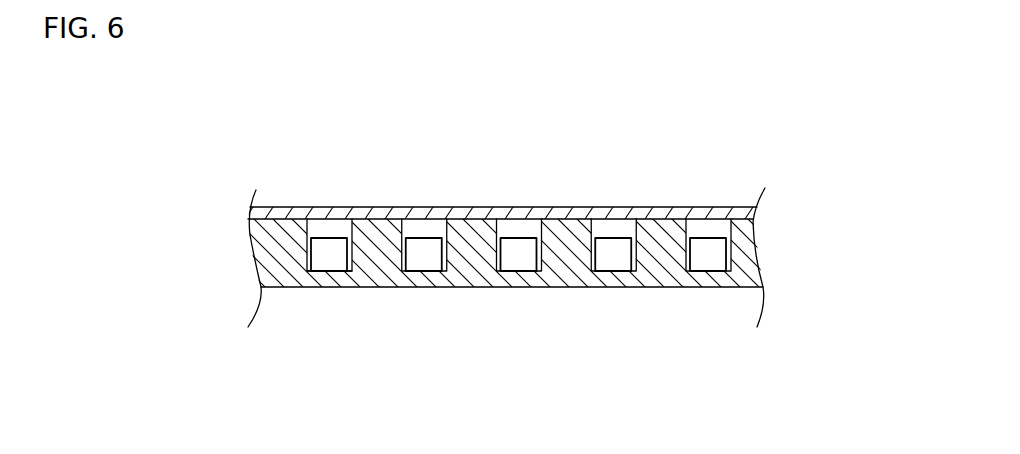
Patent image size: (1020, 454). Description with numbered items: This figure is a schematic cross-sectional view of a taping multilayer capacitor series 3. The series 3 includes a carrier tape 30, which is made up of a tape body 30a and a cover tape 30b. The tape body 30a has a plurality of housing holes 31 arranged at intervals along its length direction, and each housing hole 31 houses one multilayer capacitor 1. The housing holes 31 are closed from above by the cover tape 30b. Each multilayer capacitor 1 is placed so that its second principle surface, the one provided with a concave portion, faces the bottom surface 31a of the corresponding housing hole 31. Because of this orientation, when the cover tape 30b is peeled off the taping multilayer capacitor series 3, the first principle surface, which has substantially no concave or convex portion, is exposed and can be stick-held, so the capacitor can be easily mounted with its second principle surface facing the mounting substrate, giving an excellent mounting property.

The multilayer capacitor 1 is at (327, 237).
The taping multilayer capacitor series 3 is at (619, 168).
The carrier tape 30 is at (693, 206).
The tape body 30a is at (523, 287).
The cover tape 30b is at (495, 207).
The housing hole 31 is at (522, 219).
The bottom surface of housing hole 31a is at (332, 268).